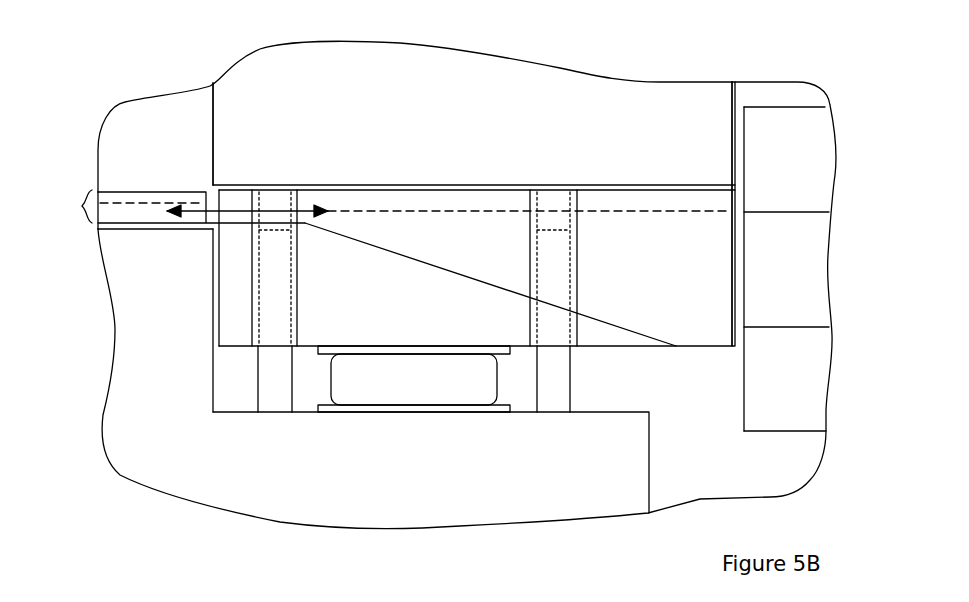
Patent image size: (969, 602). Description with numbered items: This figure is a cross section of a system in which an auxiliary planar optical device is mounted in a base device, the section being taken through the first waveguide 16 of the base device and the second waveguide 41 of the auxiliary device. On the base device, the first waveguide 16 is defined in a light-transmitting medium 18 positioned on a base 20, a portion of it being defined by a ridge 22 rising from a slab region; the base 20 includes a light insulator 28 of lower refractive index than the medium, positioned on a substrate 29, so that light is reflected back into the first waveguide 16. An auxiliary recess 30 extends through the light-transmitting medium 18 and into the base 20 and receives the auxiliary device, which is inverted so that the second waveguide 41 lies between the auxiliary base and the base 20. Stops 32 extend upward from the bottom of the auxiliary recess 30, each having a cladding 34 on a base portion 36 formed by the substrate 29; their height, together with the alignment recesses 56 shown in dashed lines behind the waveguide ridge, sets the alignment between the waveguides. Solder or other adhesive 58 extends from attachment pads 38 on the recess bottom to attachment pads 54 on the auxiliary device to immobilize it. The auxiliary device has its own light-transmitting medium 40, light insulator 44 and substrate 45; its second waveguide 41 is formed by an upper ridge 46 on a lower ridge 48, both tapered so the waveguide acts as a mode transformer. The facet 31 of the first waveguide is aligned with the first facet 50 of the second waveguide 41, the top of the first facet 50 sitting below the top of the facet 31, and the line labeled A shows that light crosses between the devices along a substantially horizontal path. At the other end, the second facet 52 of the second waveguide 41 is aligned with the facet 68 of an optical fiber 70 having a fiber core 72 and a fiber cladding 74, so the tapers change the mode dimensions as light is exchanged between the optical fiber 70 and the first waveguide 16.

The first waveguide 16 is at (107, 172).
The light-transmitting medium 18 is at (82, 206).
The base 20 is at (92, 222).
The ridge 22 is at (118, 198).
The light insulator 28 is at (112, 232).
The substrate 29 is at (215, 482).
The auxiliary recess 30 is at (302, 415).
The facet 31 is at (197, 200).
The stops 32 is at (305, 289).
The cladding 34 is at (278, 198).
The base portion 36 is at (275, 325).
The attachment pads 38 is at (407, 413).
The light-transmitting medium 40 is at (440, 250).
The second waveguide 41 is at (521, 303).
The light insulator 44 is at (372, 190).
The substrate 45 is at (398, 68).
The upper ridge 46 is at (498, 288).
The lower ridge 48 is at (232, 222).
The first facet 50 is at (228, 198).
The second facet 52 is at (730, 248).
The attachment pads 54 is at (393, 350).
The alignment recesses 56 is at (297, 250).
The solder or other adhesive 58 is at (467, 393).
The facet 68 is at (742, 290).
The optical fiber 70 is at (777, 84).
The fiber core 72 is at (808, 273).
The fiber cladding 74 is at (810, 145).
The line A is at (190, 233).